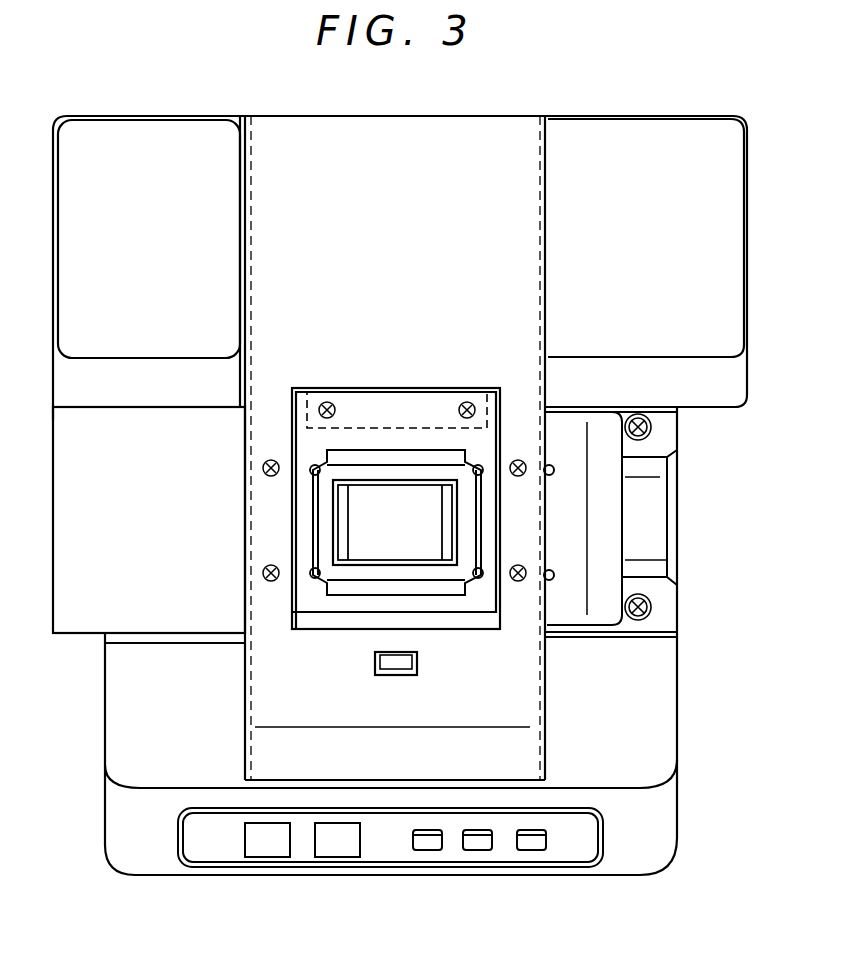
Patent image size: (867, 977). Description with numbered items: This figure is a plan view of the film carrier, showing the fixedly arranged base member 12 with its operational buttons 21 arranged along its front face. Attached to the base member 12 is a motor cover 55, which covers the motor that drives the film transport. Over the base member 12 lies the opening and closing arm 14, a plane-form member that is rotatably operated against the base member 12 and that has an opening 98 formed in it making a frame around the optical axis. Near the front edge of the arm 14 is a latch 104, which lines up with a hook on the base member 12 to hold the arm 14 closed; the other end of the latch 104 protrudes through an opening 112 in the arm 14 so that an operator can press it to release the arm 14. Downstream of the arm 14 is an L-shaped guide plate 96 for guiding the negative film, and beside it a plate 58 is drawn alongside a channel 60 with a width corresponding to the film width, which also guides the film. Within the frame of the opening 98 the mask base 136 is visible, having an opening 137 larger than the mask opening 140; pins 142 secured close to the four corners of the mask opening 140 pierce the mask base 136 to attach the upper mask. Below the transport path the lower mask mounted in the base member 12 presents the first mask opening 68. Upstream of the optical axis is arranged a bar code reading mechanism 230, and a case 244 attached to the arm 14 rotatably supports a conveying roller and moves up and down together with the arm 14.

The base member 12 is at (660, 716).
The opening and closing arm 14 is at (525, 708).
The operational buttons 21 is at (355, 845).
The motor cover 55 is at (733, 272).
The mounting plate 58 is at (673, 440).
The channel 60 is at (655, 500).
The first mask opening 68 is at (405, 482).
The L-shaped guide plate 96 is at (606, 418).
The opening 98 is at (378, 393).
The latch 104 is at (420, 660).
The opening 112 is at (402, 672).
The mask base 136 is at (482, 607).
The opening 137 is at (400, 452).
The mask opening 140 is at (373, 482).
The pins 142 is at (317, 462).
The bar code reading mechanism 230 is at (95, 617).
The case 244 is at (192, 622).